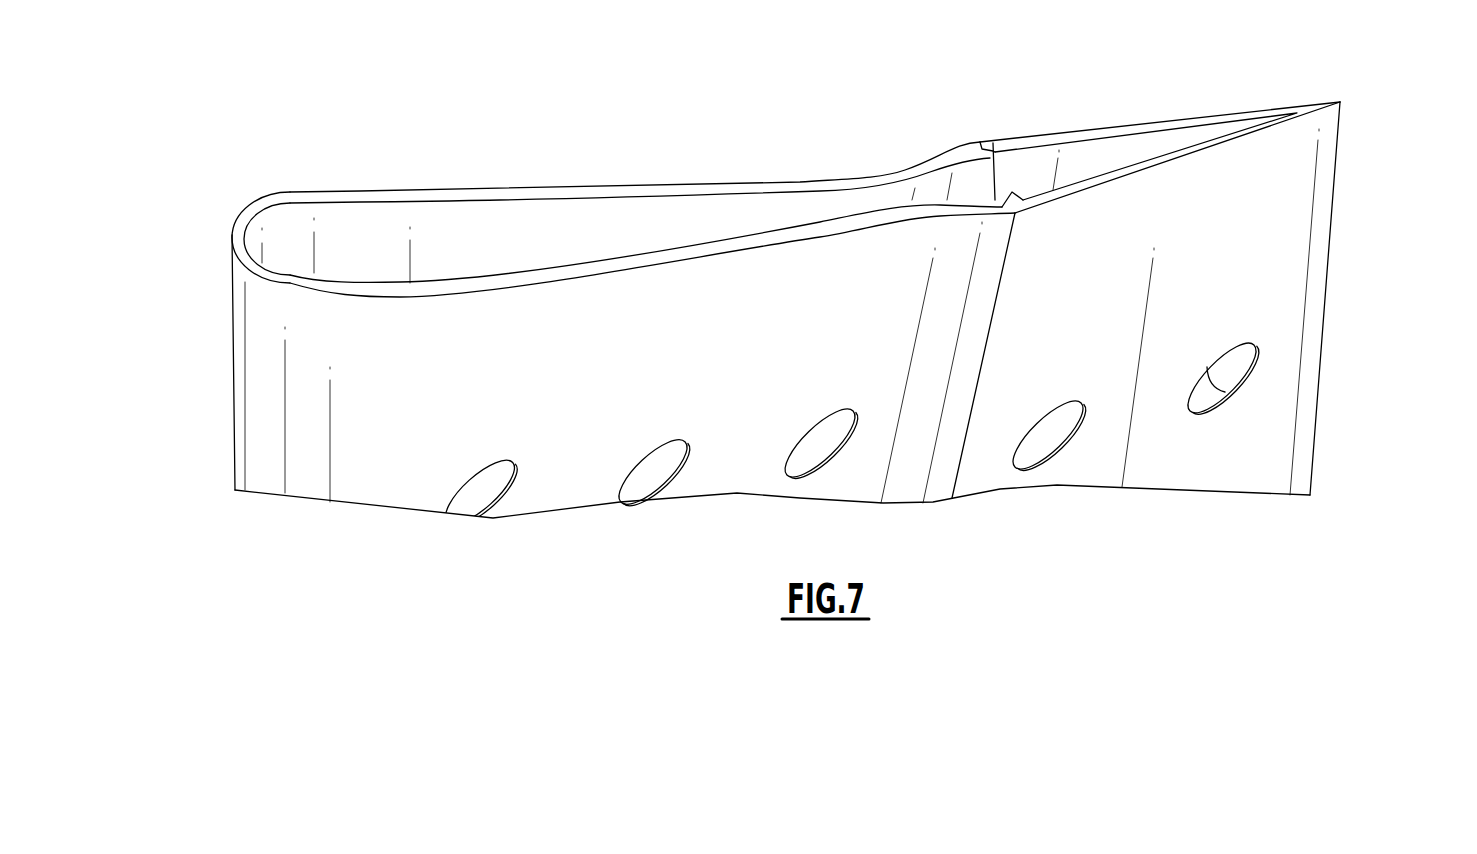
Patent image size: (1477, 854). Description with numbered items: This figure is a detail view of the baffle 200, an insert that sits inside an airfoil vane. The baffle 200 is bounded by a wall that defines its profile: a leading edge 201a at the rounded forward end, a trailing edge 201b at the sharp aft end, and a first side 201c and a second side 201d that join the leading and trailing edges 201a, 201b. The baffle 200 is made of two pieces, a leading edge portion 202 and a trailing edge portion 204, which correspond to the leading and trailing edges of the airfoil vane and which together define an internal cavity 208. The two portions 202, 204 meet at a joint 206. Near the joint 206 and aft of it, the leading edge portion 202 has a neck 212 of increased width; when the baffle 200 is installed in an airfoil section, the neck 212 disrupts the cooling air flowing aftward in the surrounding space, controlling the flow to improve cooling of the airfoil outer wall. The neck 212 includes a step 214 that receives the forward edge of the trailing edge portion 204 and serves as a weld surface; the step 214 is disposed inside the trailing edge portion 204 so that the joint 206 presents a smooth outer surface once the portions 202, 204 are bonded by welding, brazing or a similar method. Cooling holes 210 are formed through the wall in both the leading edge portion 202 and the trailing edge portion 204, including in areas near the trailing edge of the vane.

The baffle 200 is at (718, 100).
The leading edge 201a is at (223, 227).
The trailing edge 201b is at (1353, 100).
The first side 201c is at (232, 368).
The second side 201d is at (420, 198).
The leading edge portion 202 is at (500, 202).
The trailing edge portion 204 is at (1095, 133).
The joint 206 is at (967, 137).
The internal cavity 208 is at (660, 227).
The cooling holes 210 is at (1237, 362).
The neck 212 is at (938, 158).
The step 214 is at (990, 157).